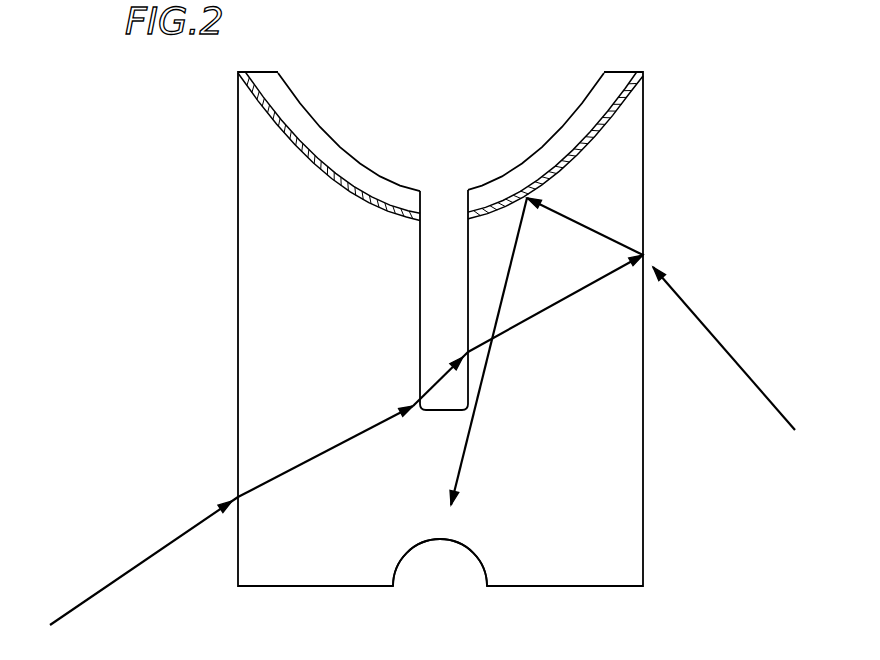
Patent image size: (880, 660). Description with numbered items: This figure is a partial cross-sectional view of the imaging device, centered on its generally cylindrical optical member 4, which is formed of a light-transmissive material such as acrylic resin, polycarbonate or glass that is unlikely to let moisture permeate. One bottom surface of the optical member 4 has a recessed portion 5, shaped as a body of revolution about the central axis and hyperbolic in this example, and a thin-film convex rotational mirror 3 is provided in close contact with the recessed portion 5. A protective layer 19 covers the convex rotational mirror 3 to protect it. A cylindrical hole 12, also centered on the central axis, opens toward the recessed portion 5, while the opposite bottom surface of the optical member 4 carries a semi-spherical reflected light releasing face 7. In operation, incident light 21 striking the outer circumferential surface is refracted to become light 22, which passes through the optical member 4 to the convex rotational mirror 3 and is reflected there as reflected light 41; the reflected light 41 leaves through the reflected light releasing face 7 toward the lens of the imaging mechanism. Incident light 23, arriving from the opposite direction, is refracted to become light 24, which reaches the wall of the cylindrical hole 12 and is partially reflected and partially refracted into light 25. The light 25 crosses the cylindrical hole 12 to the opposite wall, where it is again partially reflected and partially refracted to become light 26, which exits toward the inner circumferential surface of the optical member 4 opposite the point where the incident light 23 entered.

The convex rotational mirror 3 is at (413, 131).
The optical member 4 is at (212, 287).
The recessed portion 5 is at (282, 131).
The reflected light releasing face 7 is at (417, 550).
The cylindrical hole 12 is at (439, 207).
The protective layer 19 is at (349, 149).
The incident light 21 is at (706, 328).
The light 22 is at (582, 224).
The incident light 23 is at (142, 562).
The light 24 is at (337, 444).
The light 25 is at (440, 388).
The light 26 is at (541, 311).
The reflected light 41 is at (468, 436).